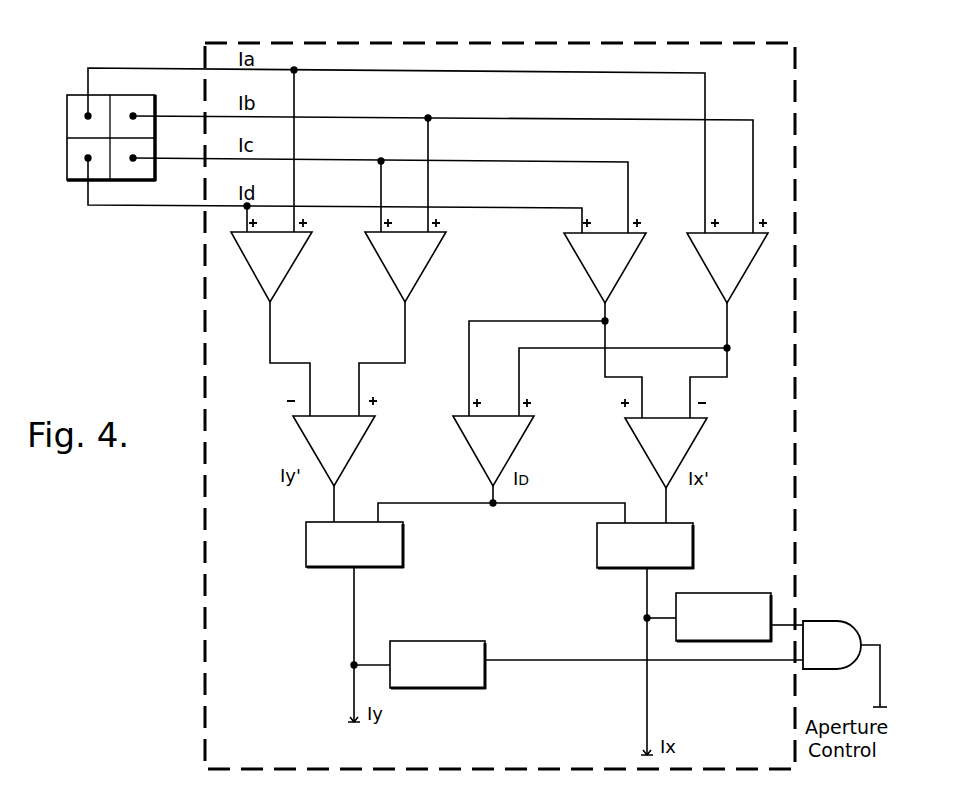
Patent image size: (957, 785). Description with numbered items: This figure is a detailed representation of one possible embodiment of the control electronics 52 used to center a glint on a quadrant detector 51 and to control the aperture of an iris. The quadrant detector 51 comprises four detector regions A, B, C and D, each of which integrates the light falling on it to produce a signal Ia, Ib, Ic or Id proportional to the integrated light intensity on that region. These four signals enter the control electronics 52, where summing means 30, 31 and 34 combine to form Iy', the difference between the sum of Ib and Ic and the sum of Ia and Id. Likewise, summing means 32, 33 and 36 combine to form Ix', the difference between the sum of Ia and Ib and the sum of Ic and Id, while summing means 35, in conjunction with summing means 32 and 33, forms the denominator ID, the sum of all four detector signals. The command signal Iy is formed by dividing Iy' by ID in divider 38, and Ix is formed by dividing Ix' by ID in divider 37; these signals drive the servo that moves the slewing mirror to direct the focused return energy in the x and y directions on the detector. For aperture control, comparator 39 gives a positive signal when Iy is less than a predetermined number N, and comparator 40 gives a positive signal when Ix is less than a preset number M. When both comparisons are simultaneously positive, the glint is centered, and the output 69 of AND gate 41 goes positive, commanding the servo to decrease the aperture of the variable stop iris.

The quadrant detector 51 is at (67, 93).
The control electronics 52 is at (723, 43).
The summing means 30 is at (284, 289).
The summing means 31 is at (397, 286).
The summing means 32 is at (593, 281).
The summing means 33 is at (737, 281).
The summing means 34 is at (351, 458).
The summing means 35 is at (510, 458).
The summing means 36 is at (684, 462).
The divider 37 is at (693, 531).
The divider 38 is at (403, 531).
The comparator 39 is at (485, 641).
The comparator 40 is at (780, 577).
The AND gate 41 is at (856, 621).
The aperture control lead 69 is at (880, 680).